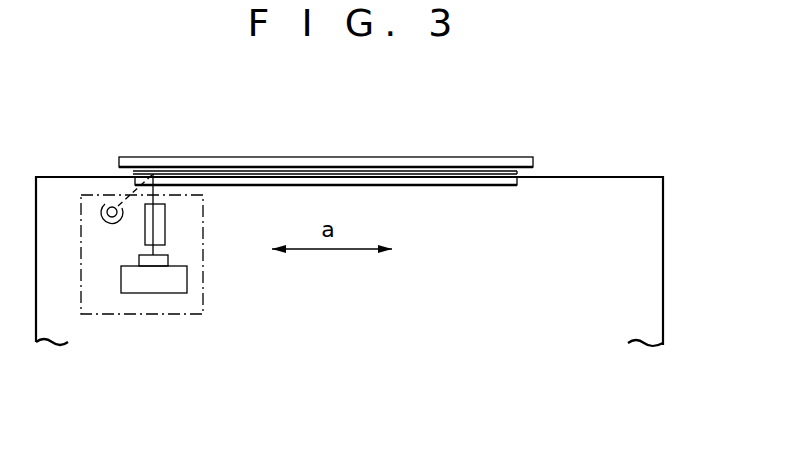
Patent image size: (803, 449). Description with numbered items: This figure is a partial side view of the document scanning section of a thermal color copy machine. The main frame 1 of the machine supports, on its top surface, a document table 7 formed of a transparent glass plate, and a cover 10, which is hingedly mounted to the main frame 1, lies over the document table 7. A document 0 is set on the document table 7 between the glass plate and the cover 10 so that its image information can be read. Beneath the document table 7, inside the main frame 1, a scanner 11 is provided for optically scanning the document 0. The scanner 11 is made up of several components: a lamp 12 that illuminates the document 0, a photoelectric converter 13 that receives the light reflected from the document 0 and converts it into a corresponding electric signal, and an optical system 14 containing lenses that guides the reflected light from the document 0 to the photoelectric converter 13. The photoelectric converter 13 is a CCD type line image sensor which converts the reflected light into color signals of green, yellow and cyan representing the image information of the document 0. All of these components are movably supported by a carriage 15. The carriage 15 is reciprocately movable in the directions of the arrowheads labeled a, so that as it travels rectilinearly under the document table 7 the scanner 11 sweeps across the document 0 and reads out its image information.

The main frame 1 is at (663, 203).
The cover 10 is at (465, 160).
The document 0 is at (365, 172).
The document table 7 is at (470, 186).
The scanner 11 is at (150, 322).
The lamp 12 is at (101, 213).
The photoelectric converter 13 is at (169, 258).
The optical system 14 is at (166, 216).
The carriage 15 is at (187, 282).